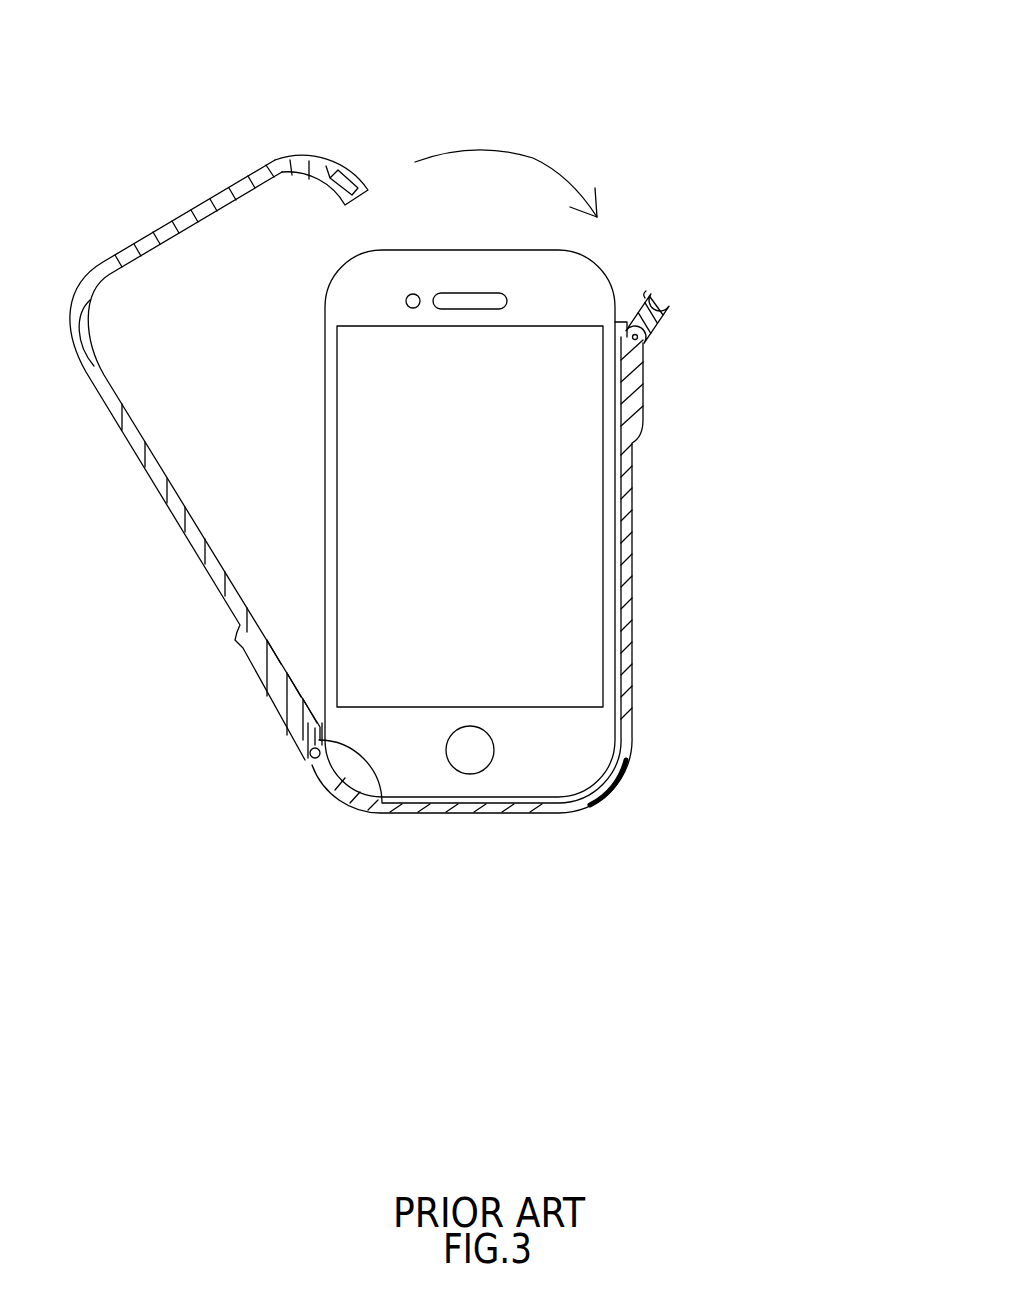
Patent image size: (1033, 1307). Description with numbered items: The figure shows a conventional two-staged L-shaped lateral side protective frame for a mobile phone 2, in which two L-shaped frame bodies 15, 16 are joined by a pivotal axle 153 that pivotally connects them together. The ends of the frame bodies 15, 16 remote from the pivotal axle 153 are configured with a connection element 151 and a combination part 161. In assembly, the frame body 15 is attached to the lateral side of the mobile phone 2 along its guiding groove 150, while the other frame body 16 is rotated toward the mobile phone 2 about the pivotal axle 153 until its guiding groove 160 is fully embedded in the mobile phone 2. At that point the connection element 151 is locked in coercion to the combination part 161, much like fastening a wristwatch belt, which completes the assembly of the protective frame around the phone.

The mobile phone 2 is at (575, 470).
The frame body 15 is at (633, 585).
The guiding groove 150 is at (613, 758).
The connection element 151 is at (662, 296).
The pivotal axle 153 is at (307, 762).
The frame body 16 is at (244, 382).
The guiding groove 160 is at (152, 253).
The combination part 161 is at (327, 168).